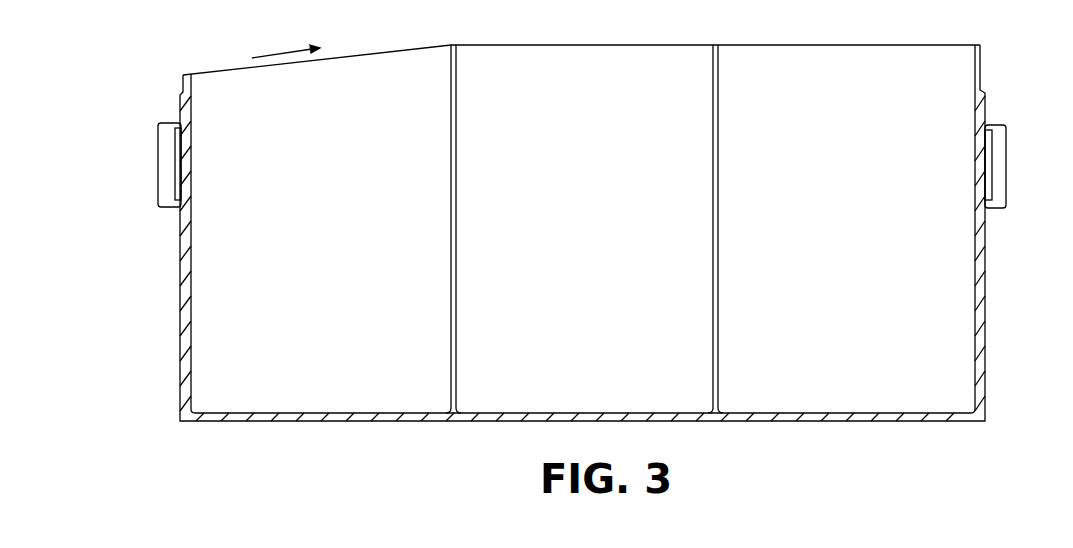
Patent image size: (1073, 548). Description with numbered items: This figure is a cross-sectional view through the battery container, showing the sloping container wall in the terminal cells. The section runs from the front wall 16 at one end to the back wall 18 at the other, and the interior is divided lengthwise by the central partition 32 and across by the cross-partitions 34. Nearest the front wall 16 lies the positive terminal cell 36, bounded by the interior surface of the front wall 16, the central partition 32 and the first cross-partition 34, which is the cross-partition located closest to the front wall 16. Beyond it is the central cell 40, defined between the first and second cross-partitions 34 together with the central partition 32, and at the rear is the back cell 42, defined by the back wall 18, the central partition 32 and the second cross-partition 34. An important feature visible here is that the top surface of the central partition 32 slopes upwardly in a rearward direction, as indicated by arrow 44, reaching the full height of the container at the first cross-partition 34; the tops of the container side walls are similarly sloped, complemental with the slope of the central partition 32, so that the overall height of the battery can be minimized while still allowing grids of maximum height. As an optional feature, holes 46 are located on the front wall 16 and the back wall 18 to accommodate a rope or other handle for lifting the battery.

The front wall 16 is at (181, 300).
The back wall 18 is at (985, 312).
The central partition 32 is at (573, 45).
The cross-partition 34 is at (713, 186).
The positive terminal cell 36 is at (332, 286).
The central cell 40 is at (589, 286).
The back cell 42 is at (862, 286).
The arrow 44 is at (271, 57).
The holes 46 is at (150, 136).